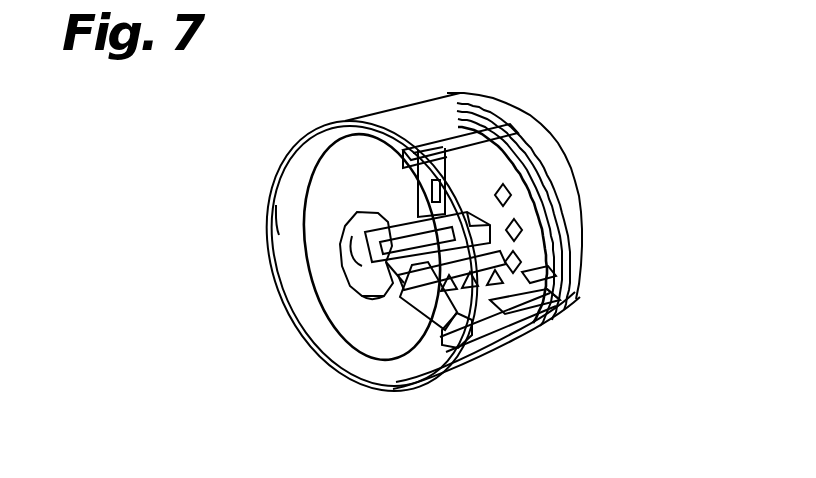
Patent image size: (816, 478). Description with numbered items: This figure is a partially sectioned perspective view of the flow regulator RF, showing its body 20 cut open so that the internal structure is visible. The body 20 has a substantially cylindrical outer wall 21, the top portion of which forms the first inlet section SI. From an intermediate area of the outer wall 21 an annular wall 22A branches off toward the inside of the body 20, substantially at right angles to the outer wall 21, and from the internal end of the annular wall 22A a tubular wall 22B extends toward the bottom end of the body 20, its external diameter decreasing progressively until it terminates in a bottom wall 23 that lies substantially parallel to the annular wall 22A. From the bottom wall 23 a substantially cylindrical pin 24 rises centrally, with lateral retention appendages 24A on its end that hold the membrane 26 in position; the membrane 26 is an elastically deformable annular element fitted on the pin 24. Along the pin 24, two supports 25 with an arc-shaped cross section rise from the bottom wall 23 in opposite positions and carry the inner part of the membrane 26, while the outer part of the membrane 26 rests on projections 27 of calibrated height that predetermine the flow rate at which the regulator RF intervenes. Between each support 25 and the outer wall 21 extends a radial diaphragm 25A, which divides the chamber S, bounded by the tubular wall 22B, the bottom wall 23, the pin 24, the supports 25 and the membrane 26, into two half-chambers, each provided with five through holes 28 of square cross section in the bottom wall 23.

The body 20 is at (344, 384).
The outer wall 21 is at (546, 313).
The annular wall 22A is at (463, 150).
The tubular wall 22B is at (524, 272).
The bottom wall 23 is at (578, 226).
The pin 24 is at (341, 260).
The lateral retention appendages 24A is at (378, 297).
The supports 25 is at (430, 207).
The radial diaphragm 25A is at (436, 198).
The membrane 26 is at (426, 336).
The projections 27 is at (418, 140).
The through holes 28 is at (520, 212).
The flow regulator RF is at (328, 88).
The first inlet section SI is at (279, 228).
The chamber S is at (433, 272).